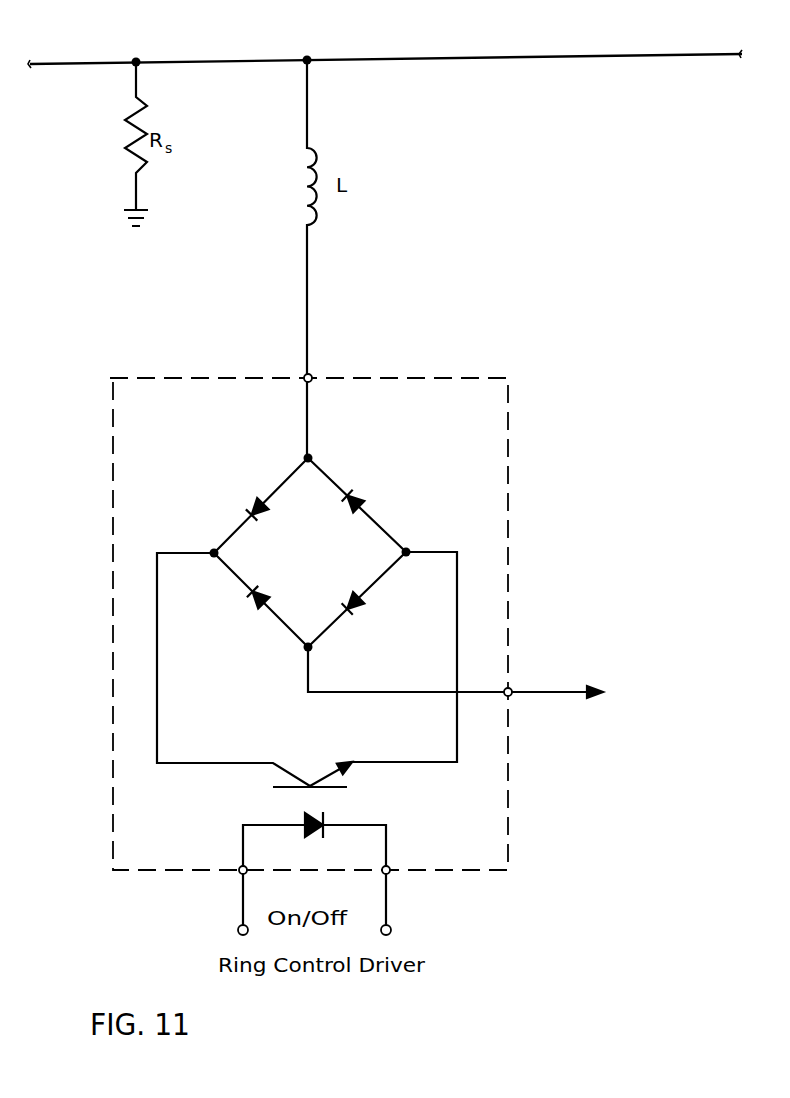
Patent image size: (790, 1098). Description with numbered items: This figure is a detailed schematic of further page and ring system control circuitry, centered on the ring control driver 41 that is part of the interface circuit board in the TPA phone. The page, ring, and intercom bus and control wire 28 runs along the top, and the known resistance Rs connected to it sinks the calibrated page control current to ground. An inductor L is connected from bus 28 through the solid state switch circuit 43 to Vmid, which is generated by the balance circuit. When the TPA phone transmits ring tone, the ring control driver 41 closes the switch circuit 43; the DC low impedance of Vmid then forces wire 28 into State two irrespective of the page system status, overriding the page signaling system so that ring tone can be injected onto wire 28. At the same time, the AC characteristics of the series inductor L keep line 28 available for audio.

The page, ring, and intercom bus and control wire 28 is at (433, 58).
The ring control driver 41 is at (508, 832).
The solid state switch circuit 43 is at (458, 745).